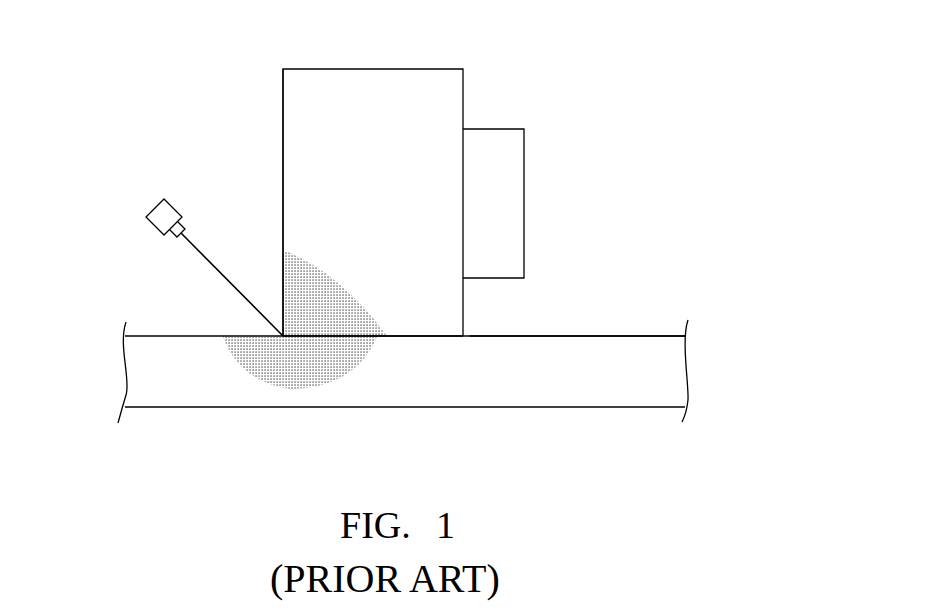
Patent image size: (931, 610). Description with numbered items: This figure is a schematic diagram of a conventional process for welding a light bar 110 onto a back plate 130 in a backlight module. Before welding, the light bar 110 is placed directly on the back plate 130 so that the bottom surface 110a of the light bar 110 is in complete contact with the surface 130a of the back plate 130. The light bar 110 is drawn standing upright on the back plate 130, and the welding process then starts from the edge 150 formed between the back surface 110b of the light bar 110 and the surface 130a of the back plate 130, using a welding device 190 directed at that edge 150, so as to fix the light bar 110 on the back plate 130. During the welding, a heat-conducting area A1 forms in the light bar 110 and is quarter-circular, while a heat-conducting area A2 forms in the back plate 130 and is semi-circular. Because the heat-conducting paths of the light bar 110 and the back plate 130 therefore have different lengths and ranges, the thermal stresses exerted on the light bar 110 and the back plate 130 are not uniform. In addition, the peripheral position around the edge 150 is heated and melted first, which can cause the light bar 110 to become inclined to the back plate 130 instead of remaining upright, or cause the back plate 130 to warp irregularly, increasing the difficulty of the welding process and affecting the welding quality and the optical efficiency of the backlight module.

The light bar 110 is at (371, 85).
The bottom surface of the light bar 110a is at (445, 338).
The back surface of the light bar 110b is at (282, 113).
The back plate 130 is at (672, 368).
The surface of the back plate 130a is at (608, 337).
The edge 150 is at (272, 314).
The welding device 190 is at (160, 215).
The heat-conducting area of the light bar A1 is at (308, 277).
The heat-conducting area of the back plate A2 is at (310, 372).